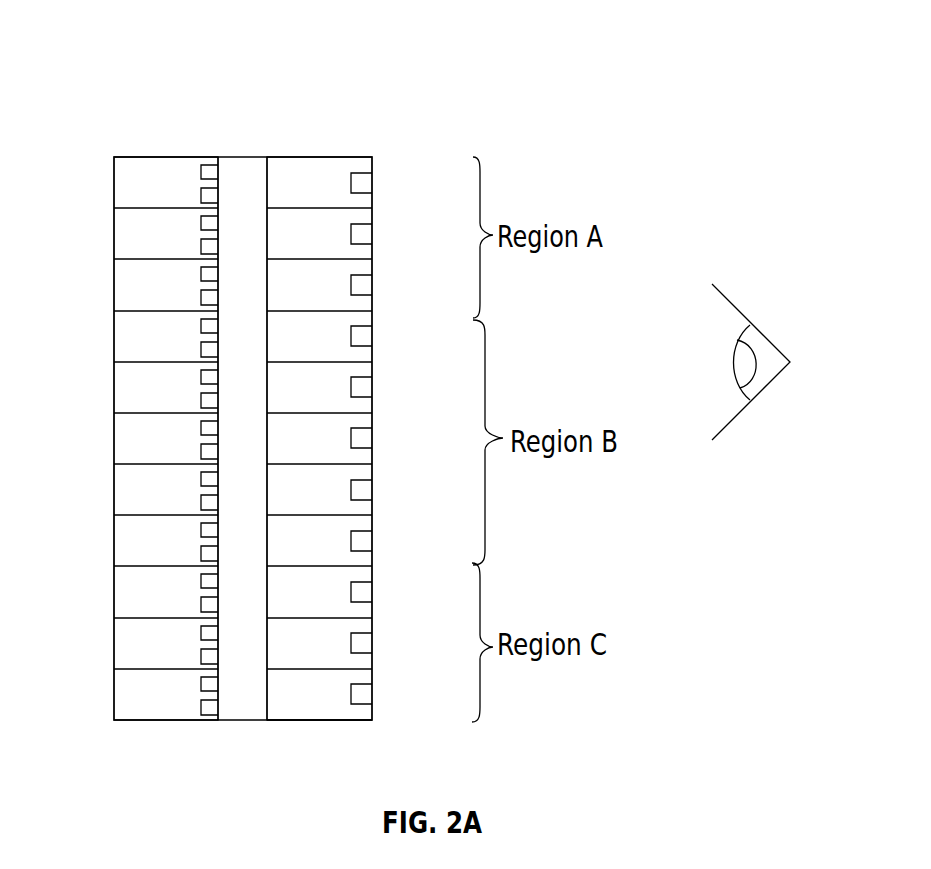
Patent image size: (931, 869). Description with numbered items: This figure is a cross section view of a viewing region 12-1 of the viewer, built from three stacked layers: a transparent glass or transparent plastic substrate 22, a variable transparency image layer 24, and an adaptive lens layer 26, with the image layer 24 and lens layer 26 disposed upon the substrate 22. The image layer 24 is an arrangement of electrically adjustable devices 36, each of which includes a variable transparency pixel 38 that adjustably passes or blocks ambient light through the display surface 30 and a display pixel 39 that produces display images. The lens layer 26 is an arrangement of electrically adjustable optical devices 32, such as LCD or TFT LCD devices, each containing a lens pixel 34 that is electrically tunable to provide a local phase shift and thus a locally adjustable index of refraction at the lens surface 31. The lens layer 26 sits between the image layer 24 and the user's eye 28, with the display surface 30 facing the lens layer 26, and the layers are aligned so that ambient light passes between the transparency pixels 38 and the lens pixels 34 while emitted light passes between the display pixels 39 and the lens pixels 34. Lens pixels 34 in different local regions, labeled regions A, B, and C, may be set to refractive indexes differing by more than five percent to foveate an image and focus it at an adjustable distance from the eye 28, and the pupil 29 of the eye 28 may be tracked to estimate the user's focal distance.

The viewing region 12-1 is at (549, 40).
The transparent substrate 22 is at (238, 528).
The variable transparency image layer 24 is at (193, 129).
The adaptive lens layer 26 is at (379, 139).
The user's eye 28 is at (781, 299).
The pupil 29 is at (762, 380).
The display surface 30 is at (218, 685).
The lens surface 31 is at (373, 712).
The electrically adjustable optical devices 32 is at (308, 187).
The lens pixels 34 is at (360, 182).
The electrically adjustable devices 36 is at (130, 245).
The variable transparency pixels 38 is at (200, 172).
The display pixels 39 is at (200, 195).